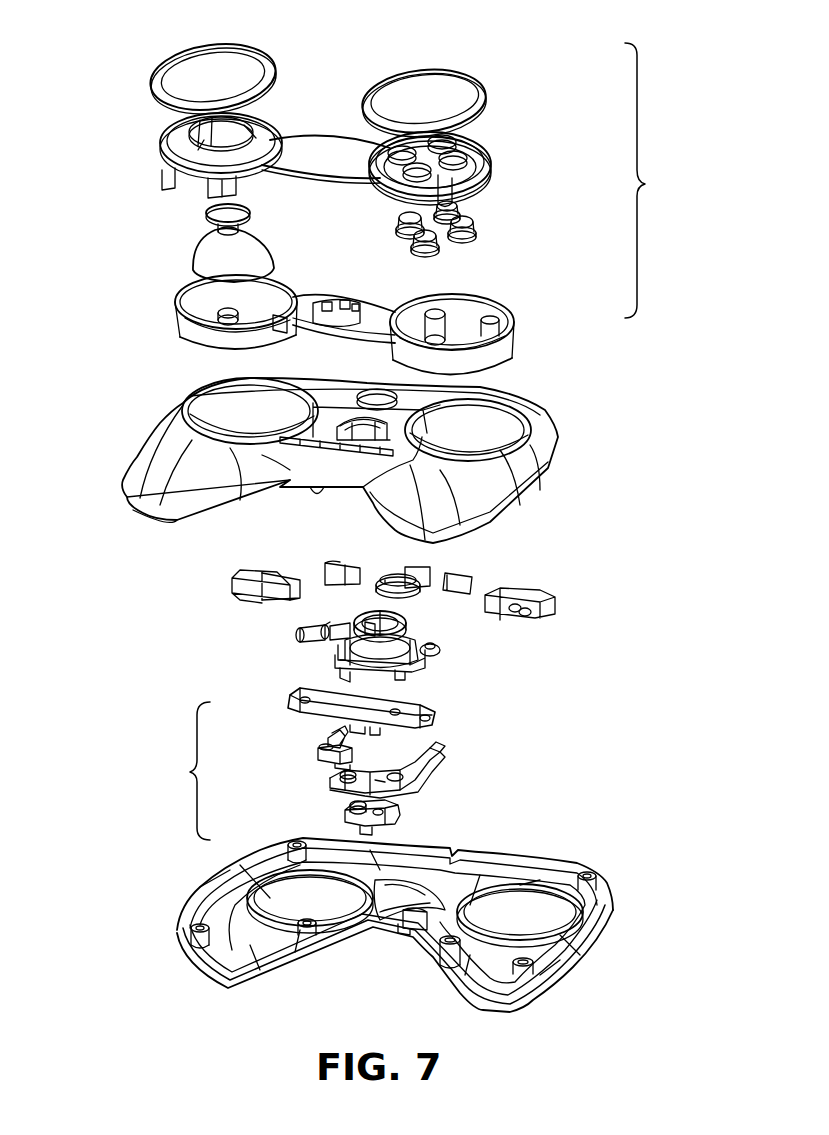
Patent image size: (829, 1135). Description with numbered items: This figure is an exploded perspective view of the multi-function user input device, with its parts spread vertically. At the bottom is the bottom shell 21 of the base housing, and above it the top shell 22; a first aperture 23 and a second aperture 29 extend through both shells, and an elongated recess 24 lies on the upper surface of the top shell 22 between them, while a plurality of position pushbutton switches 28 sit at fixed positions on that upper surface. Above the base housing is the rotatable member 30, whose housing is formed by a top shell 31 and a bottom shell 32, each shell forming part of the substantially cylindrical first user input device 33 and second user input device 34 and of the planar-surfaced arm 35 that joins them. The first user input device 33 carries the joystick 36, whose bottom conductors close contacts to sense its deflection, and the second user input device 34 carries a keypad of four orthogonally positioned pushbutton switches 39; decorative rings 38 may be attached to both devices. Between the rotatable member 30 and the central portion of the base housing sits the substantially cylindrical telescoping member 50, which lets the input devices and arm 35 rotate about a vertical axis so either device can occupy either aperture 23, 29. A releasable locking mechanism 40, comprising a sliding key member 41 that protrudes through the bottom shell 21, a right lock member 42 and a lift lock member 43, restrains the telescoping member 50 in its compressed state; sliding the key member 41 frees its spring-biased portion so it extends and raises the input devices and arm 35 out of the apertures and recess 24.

The bottom shell 21 is at (535, 852).
The top shell 22 is at (550, 418).
The first aperture 23 is at (213, 410).
The elongated recess 24 is at (340, 432).
The position pushbutton switches 28 is at (285, 582).
The second aperture 29 is at (500, 420).
The rotatable member 30 is at (657, 180).
The top shell 31 is at (490, 154).
The bottom shell 32 is at (518, 302).
The first user input device 33 is at (160, 148).
The second user input device 34 is at (458, 170).
The arm 35 is at (320, 150).
The joystick 36 is at (192, 252).
The decorative rings 38 is at (275, 68).
The pushbutton switches 39 is at (478, 214).
The releasable locking mechanism 40 is at (185, 772).
The sliding key member 41 is at (342, 810).
The right lock member 42 is at (448, 758).
The lift lock member 43 is at (312, 750).
The telescoping member 50 is at (440, 700).